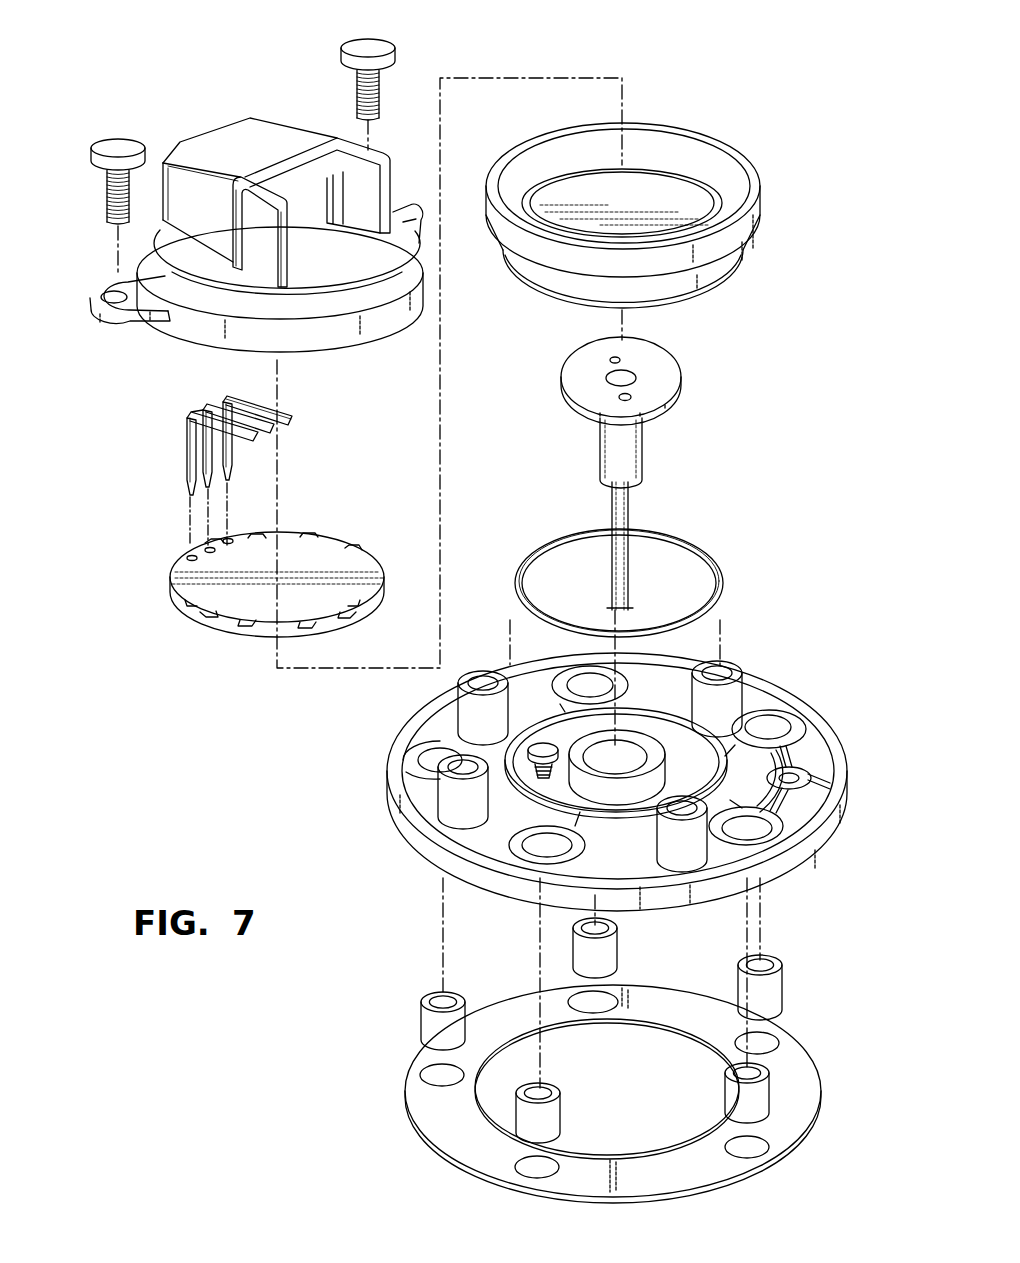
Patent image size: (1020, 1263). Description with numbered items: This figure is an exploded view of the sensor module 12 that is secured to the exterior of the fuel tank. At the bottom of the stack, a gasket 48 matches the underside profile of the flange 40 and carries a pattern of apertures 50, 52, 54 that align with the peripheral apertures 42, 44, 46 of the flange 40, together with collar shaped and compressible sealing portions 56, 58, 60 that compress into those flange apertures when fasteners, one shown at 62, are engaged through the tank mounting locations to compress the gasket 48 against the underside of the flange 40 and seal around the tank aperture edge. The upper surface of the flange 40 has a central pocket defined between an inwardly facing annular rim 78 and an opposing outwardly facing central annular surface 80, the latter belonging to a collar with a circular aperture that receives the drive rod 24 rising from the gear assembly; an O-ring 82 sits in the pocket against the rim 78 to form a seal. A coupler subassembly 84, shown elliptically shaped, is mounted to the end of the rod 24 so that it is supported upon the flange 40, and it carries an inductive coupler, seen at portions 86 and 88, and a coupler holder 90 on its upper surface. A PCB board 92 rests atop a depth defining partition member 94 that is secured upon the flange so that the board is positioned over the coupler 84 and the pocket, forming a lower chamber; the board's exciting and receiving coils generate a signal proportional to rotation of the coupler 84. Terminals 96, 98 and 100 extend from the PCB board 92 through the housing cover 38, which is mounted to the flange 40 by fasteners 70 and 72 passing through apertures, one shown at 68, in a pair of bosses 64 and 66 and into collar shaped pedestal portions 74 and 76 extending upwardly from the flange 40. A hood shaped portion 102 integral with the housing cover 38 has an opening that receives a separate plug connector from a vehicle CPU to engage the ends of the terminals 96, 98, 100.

The sensor module 12 is at (150, 677).
The drive rod 24 is at (630, 503).
The housing cover 38 is at (213, 302).
The flange 40 is at (385, 778).
The aperture 42 is at (435, 760).
The aperture 44 is at (537, 848).
The aperture 46 is at (760, 830).
The gasket 48 is at (452, 1117).
The aperture 50 is at (430, 1077).
The aperture 52 is at (532, 1170).
The aperture 54 is at (745, 1150).
The collar shaped sealing portion 56 is at (420, 1010).
The collar shaped sealing portion 58 is at (562, 1112).
The collar shaped sealing portion 60 is at (725, 1082).
The fastener 62 is at (543, 745).
The boss 64 is at (121, 325).
The boss 66 is at (392, 218).
The aperture 68 is at (106, 285).
The fastener 70 is at (93, 158).
The fastener 72 is at (397, 52).
The collar shaped pedestal portion 74 is at (442, 795).
The collar shaped pedestal portion 76 is at (745, 685).
The inwardly facing annular rim 78 is at (645, 705).
The outwardly facing central annular surface 80 is at (765, 768).
The O-ring 82 is at (559, 533).
The coupler subassembly 84 is at (585, 366).
The inductive coupler portion 86 is at (628, 400).
The inductive coupler portion 88 is at (618, 358).
The coupler holder 90 is at (638, 377).
The PCB board 92 is at (315, 545).
The partition member 94 is at (752, 215).
The terminal 96 is at (186, 433).
The terminal 98 is at (224, 402).
The terminal 100 is at (243, 397).
The hood shaped portion 102 is at (272, 132).